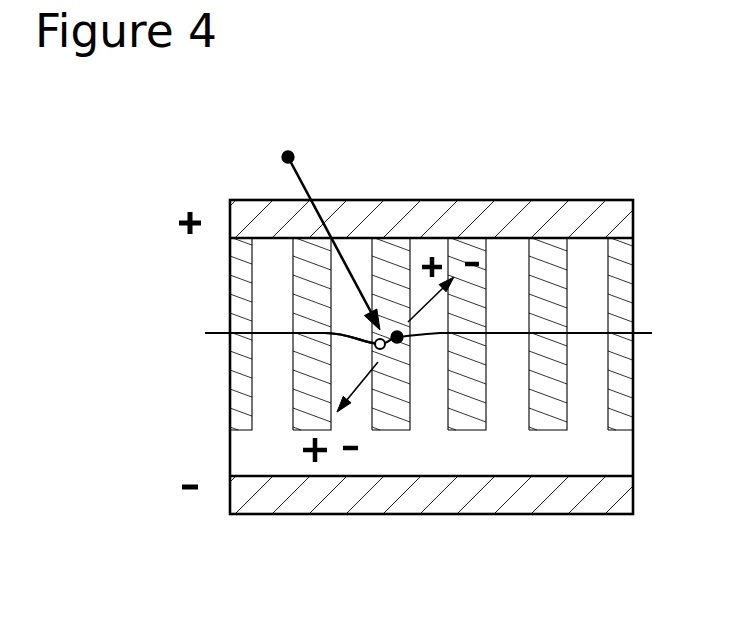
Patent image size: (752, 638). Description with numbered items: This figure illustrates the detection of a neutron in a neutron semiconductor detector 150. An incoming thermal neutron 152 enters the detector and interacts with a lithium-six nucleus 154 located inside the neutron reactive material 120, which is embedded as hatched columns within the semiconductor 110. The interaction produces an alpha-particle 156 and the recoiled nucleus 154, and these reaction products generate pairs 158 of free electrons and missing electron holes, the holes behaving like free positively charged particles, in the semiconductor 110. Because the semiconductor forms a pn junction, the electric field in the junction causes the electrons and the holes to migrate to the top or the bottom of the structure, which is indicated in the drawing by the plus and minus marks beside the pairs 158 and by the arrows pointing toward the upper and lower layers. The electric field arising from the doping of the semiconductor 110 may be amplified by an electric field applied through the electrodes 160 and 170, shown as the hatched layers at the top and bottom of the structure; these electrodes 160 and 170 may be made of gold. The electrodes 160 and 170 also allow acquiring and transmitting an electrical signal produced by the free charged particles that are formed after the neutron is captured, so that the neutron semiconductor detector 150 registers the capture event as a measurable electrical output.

The neutron semiconductor detector 150 is at (208, 112).
The incoming thermal neutron 152 is at (305, 238).
The neutron reactive material 120 is at (392, 270).
The electrode 160 is at (563, 222).
The electrode 170 is at (488, 507).
The semiconductor 110 is at (548, 452).
The lithium-6 nucleus 154 is at (453, 336).
The alpha-particle 156 is at (266, 331).
The pairs of free electrons and electron holes 158 is at (388, 358).